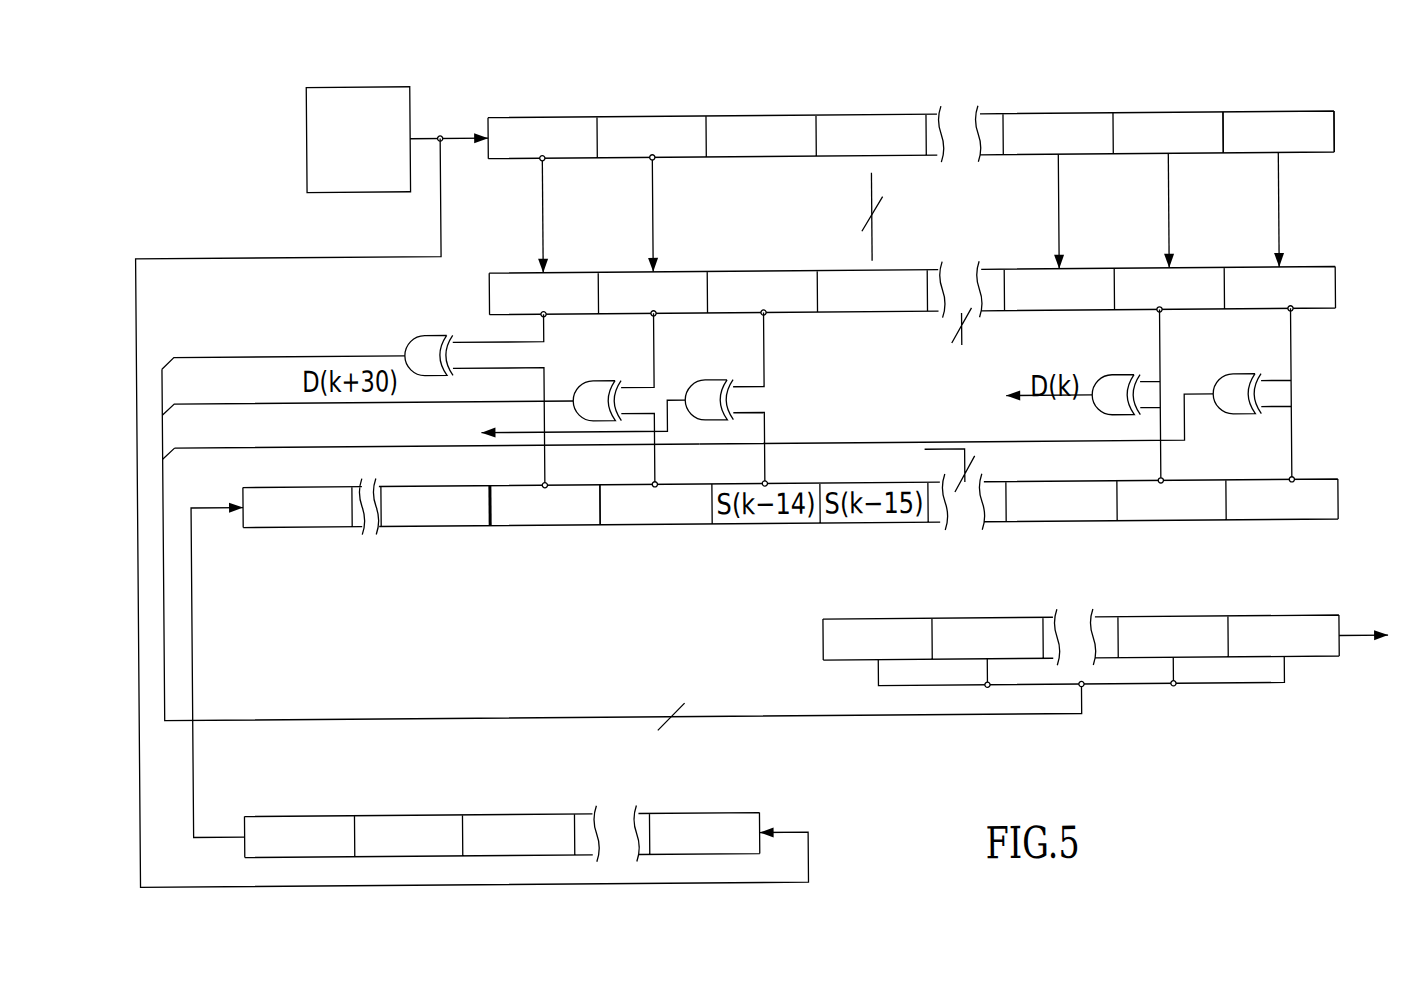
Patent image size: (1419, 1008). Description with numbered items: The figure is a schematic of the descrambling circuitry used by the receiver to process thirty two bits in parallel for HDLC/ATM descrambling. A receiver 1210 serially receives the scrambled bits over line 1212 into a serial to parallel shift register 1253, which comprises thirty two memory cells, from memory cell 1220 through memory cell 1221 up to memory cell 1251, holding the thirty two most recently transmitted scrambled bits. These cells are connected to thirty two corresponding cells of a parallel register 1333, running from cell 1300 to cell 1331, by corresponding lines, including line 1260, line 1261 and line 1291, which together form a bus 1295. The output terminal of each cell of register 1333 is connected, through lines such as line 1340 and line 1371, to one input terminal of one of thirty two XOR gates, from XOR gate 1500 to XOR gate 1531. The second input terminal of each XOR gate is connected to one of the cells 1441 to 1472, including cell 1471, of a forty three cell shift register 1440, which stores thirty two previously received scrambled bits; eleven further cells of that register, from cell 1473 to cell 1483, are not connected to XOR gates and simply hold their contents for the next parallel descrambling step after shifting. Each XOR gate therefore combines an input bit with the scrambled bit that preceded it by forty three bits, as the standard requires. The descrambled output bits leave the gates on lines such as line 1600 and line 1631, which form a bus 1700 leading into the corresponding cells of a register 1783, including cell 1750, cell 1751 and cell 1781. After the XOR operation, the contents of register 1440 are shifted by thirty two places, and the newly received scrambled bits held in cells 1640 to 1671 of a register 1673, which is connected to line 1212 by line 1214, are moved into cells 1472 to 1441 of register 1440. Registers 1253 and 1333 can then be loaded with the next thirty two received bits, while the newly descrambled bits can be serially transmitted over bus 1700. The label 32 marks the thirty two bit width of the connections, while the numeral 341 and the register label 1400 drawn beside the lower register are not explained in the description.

The receiver 1210 is at (310, 136).
The line 1212 is at (445, 128).
The line 1214 is at (444, 184).
The memory cell 1251 is at (558, 116).
The serial to parallel shift register 1253 is at (1176, 96).
The memory cell 1221 is at (1168, 116).
The memory cell 1220 is at (1268, 116).
The line 1291 is at (547, 187).
The line 1261 is at (1171, 188).
The line 1260 is at (1281, 190).
The bus 1295 is at (874, 186).
The memory cell 1331 is at (514, 272).
The parallel register 1333 is at (1325, 252).
The memory cell 1300 is at (1197, 253).
The XOR gate 1531 is at (421, 344).
The line 1371 is at (546, 327).
The line 1631 is at (200, 351).
The line 1600 is at (199, 444).
The forty three cell shift register 1440 is at (828, 436).
The connection line 341 is at (1162, 342).
The line 1340 is at (1293, 344).
The XOR gate 1500 is at (1235, 386).
The third register 1400 is at (1199, 464).
The memory cell 1441 is at (1338, 503).
The memory cell 1483 is at (285, 524).
The memory cell 1473 is at (420, 526).
The memory cell 1472 is at (533, 527).
The memory cell 1471 is at (642, 528).
The cell 1781 is at (877, 619).
The cell 1750 is at (1284, 620).
The register 1783 is at (1235, 600).
The cell 1751 is at (1344, 648).
The bus 1700 is at (740, 712).
The cell 1640 is at (320, 812).
The cell 1671 is at (704, 812).
The register 1673 is at (710, 798).
The bus width indicator 32 is at (830, 463).